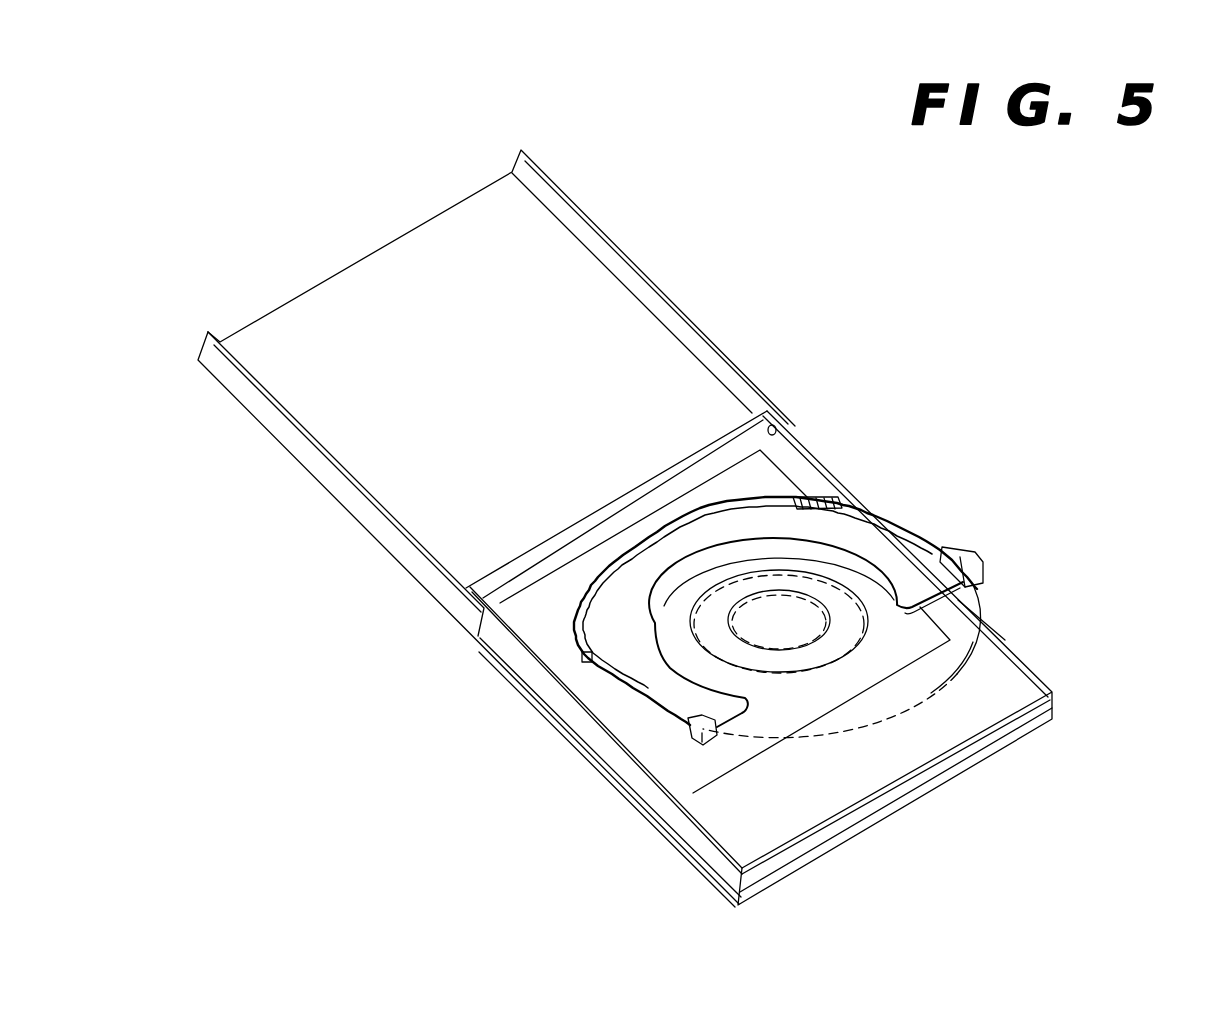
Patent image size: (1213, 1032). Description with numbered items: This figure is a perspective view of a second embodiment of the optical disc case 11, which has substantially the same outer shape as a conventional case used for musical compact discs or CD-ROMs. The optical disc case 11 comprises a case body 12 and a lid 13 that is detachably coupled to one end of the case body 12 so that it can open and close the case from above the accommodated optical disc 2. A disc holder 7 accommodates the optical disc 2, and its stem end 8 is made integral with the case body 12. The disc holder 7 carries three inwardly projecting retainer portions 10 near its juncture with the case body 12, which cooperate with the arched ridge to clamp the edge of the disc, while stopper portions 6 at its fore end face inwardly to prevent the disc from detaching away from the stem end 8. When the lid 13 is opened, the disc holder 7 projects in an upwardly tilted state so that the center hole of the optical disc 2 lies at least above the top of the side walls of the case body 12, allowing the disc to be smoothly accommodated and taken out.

The optical disc 2 is at (950, 658).
The stopper portions 6 is at (973, 562).
The disc holder 7 is at (552, 625).
The stem end 8 is at (707, 477).
The retainer portions 10 is at (790, 500).
The optical disc case 11 is at (625, 533).
The case body 12 is at (741, 816).
The lid 13 is at (436, 238).